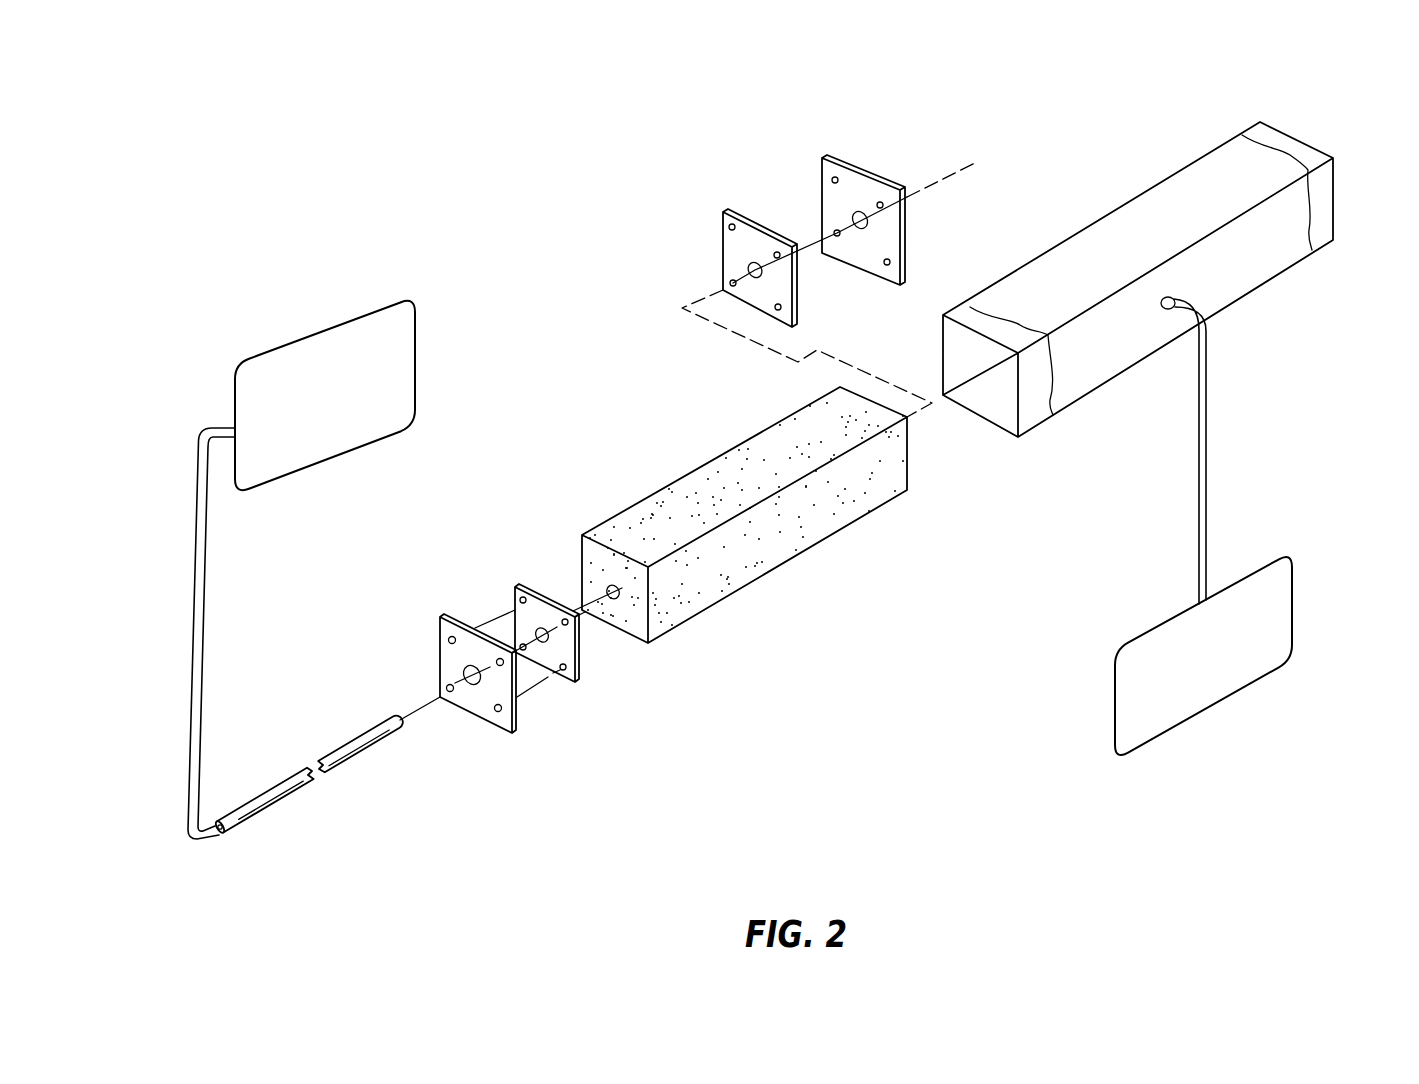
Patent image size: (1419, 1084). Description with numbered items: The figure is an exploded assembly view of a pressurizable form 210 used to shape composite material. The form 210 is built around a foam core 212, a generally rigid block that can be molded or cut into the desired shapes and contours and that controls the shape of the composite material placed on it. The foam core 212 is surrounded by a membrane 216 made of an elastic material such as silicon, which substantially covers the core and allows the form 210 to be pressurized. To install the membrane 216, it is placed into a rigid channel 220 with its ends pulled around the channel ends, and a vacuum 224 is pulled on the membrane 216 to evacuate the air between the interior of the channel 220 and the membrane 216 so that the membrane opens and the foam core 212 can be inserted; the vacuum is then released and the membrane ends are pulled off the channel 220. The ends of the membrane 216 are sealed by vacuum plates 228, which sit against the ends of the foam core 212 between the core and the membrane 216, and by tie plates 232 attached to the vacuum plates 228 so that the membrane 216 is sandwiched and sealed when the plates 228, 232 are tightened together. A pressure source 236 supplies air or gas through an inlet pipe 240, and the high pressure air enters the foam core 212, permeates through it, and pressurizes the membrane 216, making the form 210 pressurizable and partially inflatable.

The pressurizable form 210 is at (688, 813).
The foam core 212 is at (783, 527).
The membrane 216 is at (1303, 152).
The rigid channel 220 is at (1152, 212).
The vacuum 224 is at (1115, 715).
The vacuum plates 228 is at (720, 233).
The tie plates 232 is at (870, 172).
The pressure source 236 is at (337, 320).
The inlet pipe 240 is at (323, 750).